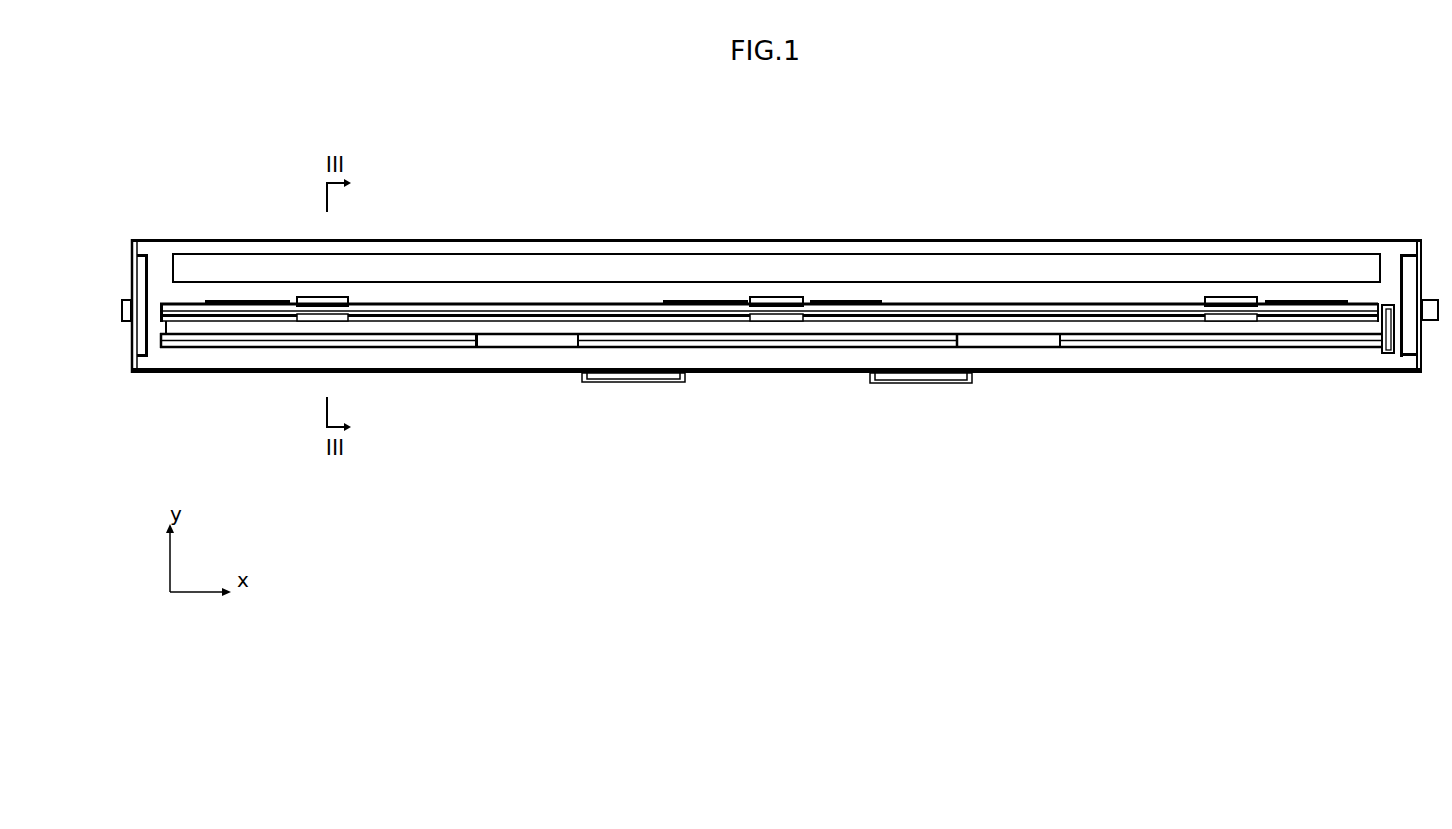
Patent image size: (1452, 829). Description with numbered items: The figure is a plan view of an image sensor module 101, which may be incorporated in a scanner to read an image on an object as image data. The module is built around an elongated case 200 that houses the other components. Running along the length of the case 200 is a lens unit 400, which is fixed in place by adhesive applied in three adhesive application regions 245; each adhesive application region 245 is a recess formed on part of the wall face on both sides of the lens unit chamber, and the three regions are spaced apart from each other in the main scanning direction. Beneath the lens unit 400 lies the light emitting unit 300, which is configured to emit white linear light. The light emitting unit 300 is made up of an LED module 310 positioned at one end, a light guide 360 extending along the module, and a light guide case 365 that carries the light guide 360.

The image sensor module 101 is at (196, 133).
The case 200 is at (218, 241).
The adhesive application region 245 is at (340, 297).
The lens unit 400 is at (480, 311).
The light emitting unit 300 is at (905, 356).
The LED module 310 is at (1390, 352).
The light guide 360 is at (635, 327).
The light guide case 365 is at (455, 348).